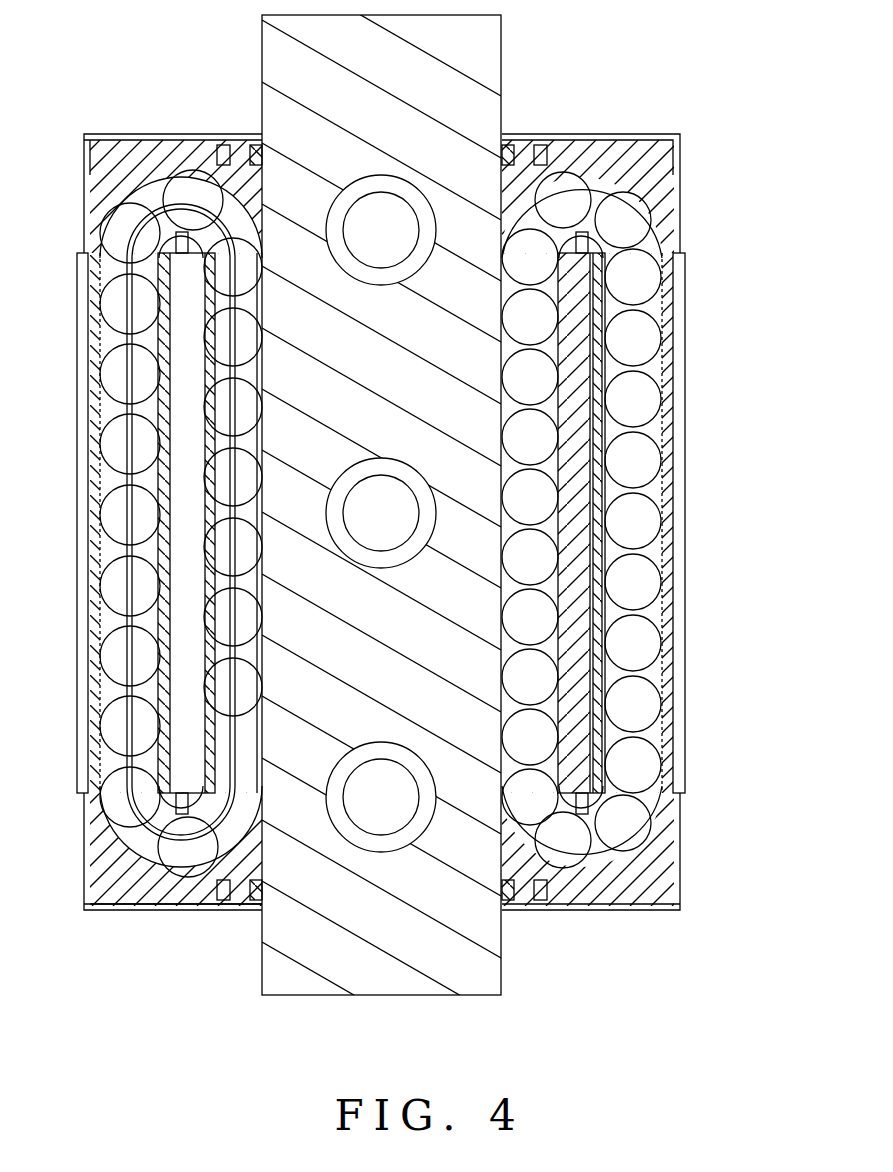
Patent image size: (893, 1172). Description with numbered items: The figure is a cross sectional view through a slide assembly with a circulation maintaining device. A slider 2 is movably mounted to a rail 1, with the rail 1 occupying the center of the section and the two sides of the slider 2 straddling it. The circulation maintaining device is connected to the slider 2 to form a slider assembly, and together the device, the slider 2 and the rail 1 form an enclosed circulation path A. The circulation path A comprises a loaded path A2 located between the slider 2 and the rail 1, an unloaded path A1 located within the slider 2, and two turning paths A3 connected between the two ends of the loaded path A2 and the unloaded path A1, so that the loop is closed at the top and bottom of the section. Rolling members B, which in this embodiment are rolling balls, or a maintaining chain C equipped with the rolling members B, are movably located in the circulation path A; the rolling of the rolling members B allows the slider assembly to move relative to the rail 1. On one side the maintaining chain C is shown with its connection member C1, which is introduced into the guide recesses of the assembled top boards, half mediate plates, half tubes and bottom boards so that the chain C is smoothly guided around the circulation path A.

The rail 1 is at (418, 102).
The slider 2 is at (188, 466).
The circulation path A is at (735, 470).
The unloaded path A1 is at (653, 374).
The loaded path A2 is at (550, 463).
The turning paths A3 is at (655, 239).
The rolling members B is at (630, 642).
The maintaining chain C is at (120, 662).
The connection member C1 is at (130, 717).